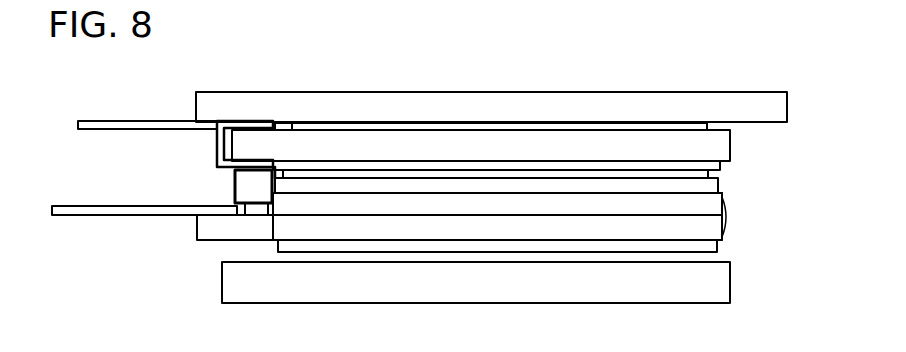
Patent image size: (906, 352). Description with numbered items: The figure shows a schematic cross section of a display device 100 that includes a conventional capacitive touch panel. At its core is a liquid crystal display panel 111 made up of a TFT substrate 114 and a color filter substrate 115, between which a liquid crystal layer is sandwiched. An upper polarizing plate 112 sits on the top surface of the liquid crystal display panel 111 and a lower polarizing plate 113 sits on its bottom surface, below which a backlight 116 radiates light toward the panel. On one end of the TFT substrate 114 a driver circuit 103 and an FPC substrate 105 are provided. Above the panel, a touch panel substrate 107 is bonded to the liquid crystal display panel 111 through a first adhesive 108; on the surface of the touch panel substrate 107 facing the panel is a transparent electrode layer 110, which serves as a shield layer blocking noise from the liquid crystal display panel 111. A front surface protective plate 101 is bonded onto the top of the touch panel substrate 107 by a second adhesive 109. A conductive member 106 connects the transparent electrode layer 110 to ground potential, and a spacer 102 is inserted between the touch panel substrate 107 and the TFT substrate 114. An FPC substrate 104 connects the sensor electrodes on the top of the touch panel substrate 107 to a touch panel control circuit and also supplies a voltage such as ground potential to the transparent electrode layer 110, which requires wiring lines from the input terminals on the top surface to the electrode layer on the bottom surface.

The display device 100 is at (742, 52).
The front surface protective plate 101 is at (335, 92).
The spacer 102 is at (243, 185).
The driver circuit 103 is at (258, 210).
The FPC substrate 104 is at (100, 121).
The FPC substrate 105 is at (87, 215).
The conductive member 106 is at (222, 148).
The touch panel substrate 107 is at (732, 148).
The first adhesive 108 is at (709, 175).
The second adhesive 109 is at (707, 127).
The transparent electrode layer 110 is at (721, 166).
The liquid crystal display panel 111 is at (725, 210).
The upper polarizing plate 112 is at (719, 186).
The lower polarizing plate 113 is at (719, 246).
The TFT substrate 114 is at (588, 228).
The color filter substrate 115 is at (518, 207).
The backlight 116 is at (731, 282).